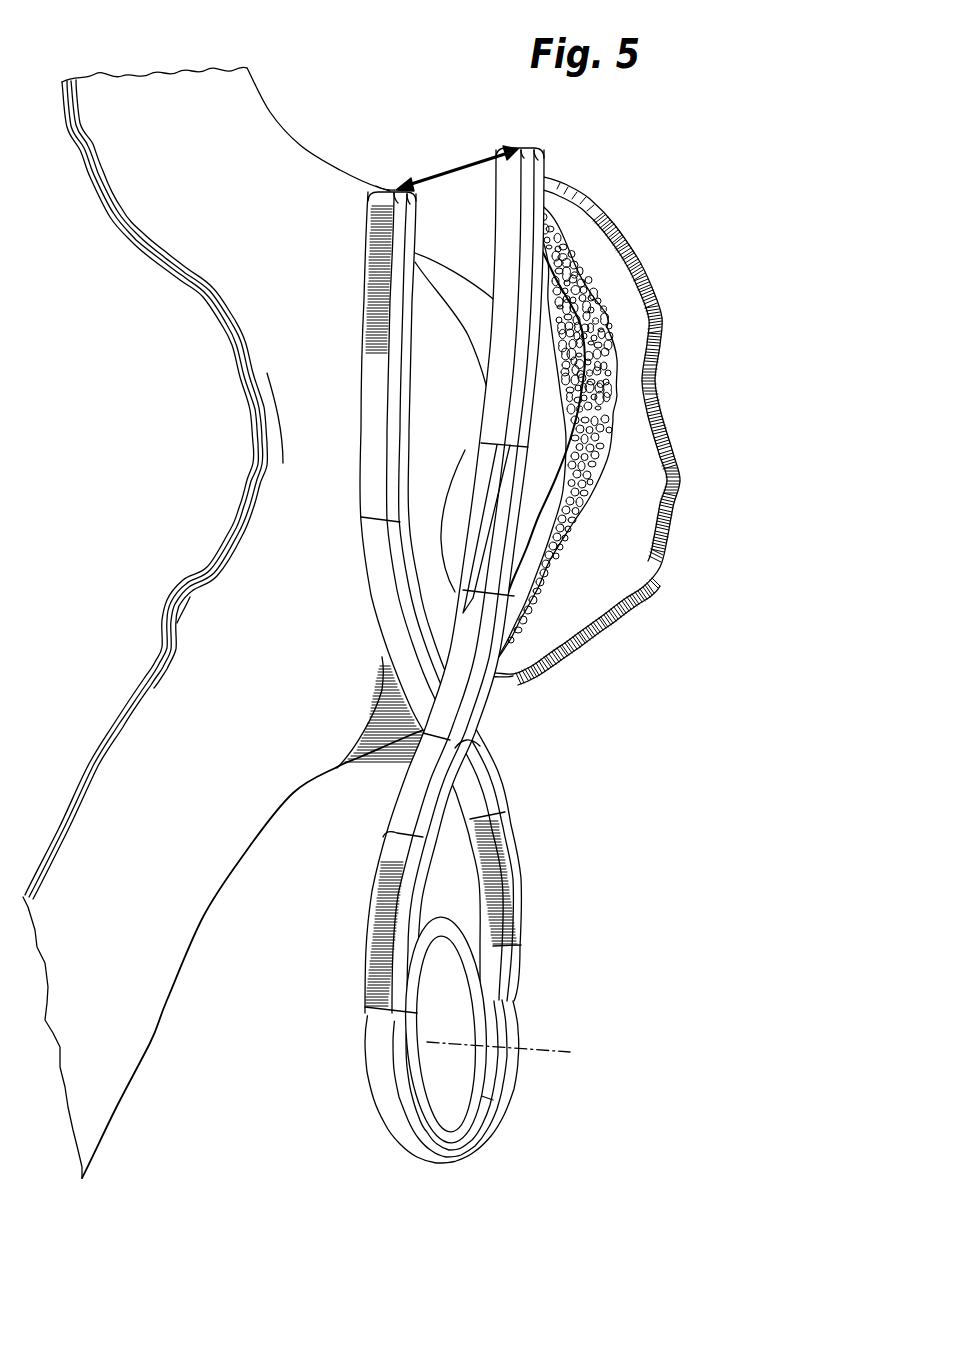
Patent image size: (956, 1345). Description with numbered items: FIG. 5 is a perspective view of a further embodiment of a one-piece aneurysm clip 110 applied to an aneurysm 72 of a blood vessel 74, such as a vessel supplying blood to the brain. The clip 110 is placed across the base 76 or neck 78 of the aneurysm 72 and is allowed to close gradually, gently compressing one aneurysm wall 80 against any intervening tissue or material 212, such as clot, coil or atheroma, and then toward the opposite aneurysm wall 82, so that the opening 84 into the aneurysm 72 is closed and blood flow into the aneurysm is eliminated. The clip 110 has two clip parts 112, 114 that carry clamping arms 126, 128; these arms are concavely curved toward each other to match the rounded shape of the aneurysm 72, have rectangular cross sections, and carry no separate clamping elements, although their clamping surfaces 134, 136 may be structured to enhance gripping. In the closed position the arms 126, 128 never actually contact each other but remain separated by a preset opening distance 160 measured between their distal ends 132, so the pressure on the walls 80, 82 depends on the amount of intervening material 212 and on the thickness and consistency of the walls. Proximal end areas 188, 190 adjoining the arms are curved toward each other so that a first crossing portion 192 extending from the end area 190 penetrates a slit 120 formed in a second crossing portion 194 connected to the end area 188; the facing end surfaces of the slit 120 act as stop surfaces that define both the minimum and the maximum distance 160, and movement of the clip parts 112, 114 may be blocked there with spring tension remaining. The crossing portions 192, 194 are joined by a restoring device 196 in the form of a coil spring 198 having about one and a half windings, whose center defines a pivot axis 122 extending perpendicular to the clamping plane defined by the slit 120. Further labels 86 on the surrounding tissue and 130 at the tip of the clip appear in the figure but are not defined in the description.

The aneurysm 72 is at (657, 580).
The blood vessel 74 is at (100, 777).
The base 76 is at (354, 172).
The neck 78 is at (375, 183).
The aneurysm wall 80 is at (423, 343).
The opposite aneurysm wall 82 is at (570, 310).
The opening 84 is at (607, 473).
The tissue edge 86 is at (140, 1043).
The aneurysm clip 110 is at (490, 645).
The clip part 112 is at (362, 262).
The clip part 114 is at (546, 168).
The slit 120 is at (460, 783).
The pivot axis 122 is at (572, 1048).
The clamping arm 126 is at (389, 599).
The clamping arm 128 is at (603, 392).
The first distal end 130 is at (380, 198).
The distal end 132 is at (517, 150).
The clamping surface 134 is at (388, 320).
The clamping surface 136 is at (563, 243).
The distance 160 is at (462, 165).
The proximal end area 188 is at (393, 620).
The proximal end area 190 is at (530, 625).
The first crossing portion 192 is at (414, 788).
The second crossing portion 194 is at (457, 750).
The restoring device 196 is at (485, 1144).
The coil spring 198 is at (403, 1147).
The intervening tissue/material 212 is at (583, 520).